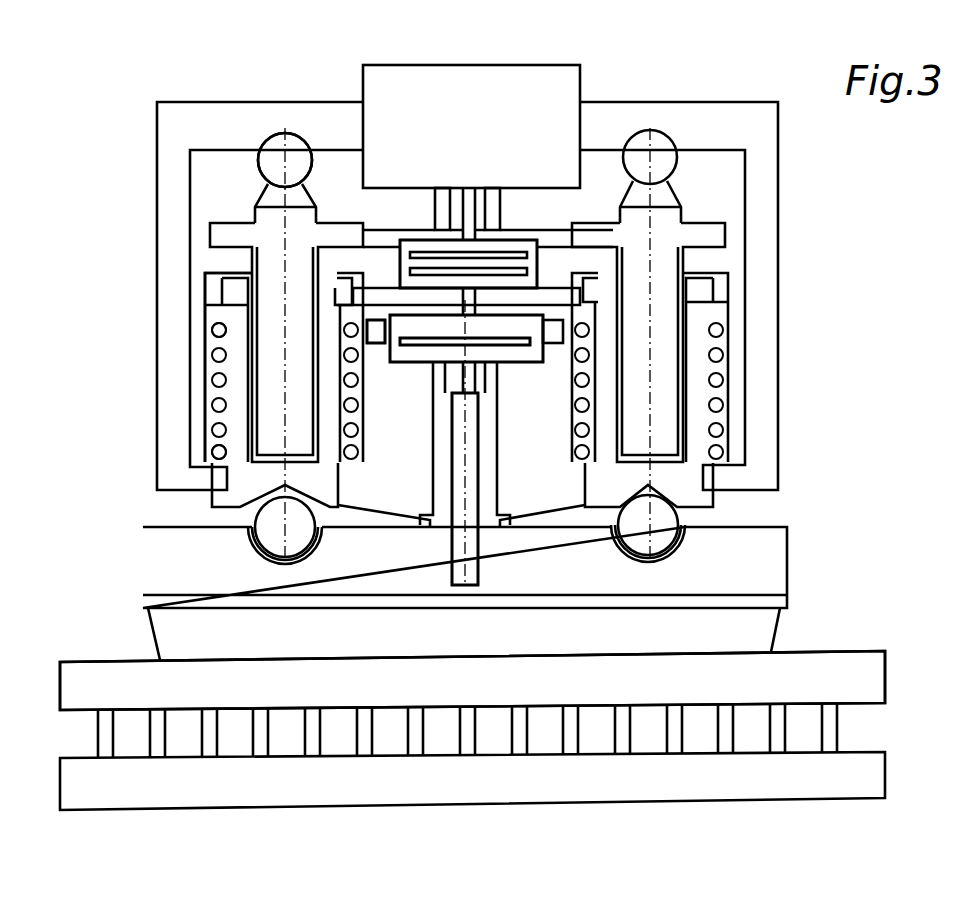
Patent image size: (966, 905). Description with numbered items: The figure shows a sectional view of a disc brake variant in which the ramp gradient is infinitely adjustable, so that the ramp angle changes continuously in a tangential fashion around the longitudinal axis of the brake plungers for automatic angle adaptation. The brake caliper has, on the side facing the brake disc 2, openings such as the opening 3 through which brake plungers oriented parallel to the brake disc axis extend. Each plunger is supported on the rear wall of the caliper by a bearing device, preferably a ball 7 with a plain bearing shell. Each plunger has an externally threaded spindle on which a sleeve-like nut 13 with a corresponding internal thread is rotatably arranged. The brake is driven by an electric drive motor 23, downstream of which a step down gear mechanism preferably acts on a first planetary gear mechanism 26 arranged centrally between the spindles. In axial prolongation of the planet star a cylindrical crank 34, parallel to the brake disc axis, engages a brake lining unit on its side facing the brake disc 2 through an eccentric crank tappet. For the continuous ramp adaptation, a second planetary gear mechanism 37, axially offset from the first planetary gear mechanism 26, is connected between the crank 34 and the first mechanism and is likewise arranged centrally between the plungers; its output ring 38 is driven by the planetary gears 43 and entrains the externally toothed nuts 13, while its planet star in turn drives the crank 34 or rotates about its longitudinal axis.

The brake disc 2 is at (863, 680).
The opening 3 is at (242, 338).
The ball 7 is at (283, 157).
The nut 13 is at (200, 336).
The electric drive motor 23 is at (487, 85).
The planetary gear mechanism 26 is at (537, 230).
The crank 34 is at (470, 437).
The second planetary gear mechanism 37 is at (530, 301).
The output ring 38 is at (385, 340).
The planetary gears 43 is at (422, 327).